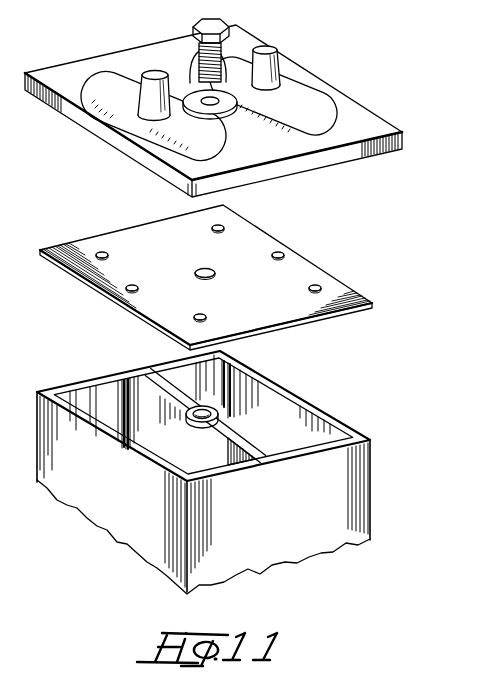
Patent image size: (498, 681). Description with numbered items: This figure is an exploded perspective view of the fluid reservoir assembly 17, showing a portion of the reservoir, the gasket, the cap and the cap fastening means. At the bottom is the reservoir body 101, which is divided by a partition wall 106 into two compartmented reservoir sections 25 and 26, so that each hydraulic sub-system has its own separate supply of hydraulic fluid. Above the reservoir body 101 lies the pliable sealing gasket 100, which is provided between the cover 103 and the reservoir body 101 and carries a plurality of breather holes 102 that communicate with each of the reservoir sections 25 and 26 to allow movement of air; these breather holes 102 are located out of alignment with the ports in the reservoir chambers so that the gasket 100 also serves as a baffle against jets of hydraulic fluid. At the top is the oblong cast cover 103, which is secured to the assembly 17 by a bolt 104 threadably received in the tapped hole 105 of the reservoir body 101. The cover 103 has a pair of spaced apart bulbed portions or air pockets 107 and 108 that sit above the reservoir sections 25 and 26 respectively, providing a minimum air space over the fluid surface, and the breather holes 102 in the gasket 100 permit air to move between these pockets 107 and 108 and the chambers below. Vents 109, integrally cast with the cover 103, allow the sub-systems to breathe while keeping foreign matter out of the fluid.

The fluid reservoir assembly 17 is at (378, 487).
The reservoir section 25 is at (88, 405).
The reservoir section 26 is at (267, 390).
The sealing gasket 100 is at (357, 288).
The reservoir body 101 is at (363, 438).
The breather holes 102 is at (225, 227).
The cover 103 is at (370, 120).
The bolt 104 is at (220, 20).
The tapped hole 105 is at (222, 404).
The partition wall 106 is at (253, 440).
The air pocket 107 is at (120, 110).
The air pocket 108 is at (307, 103).
The vents 109 is at (152, 72).